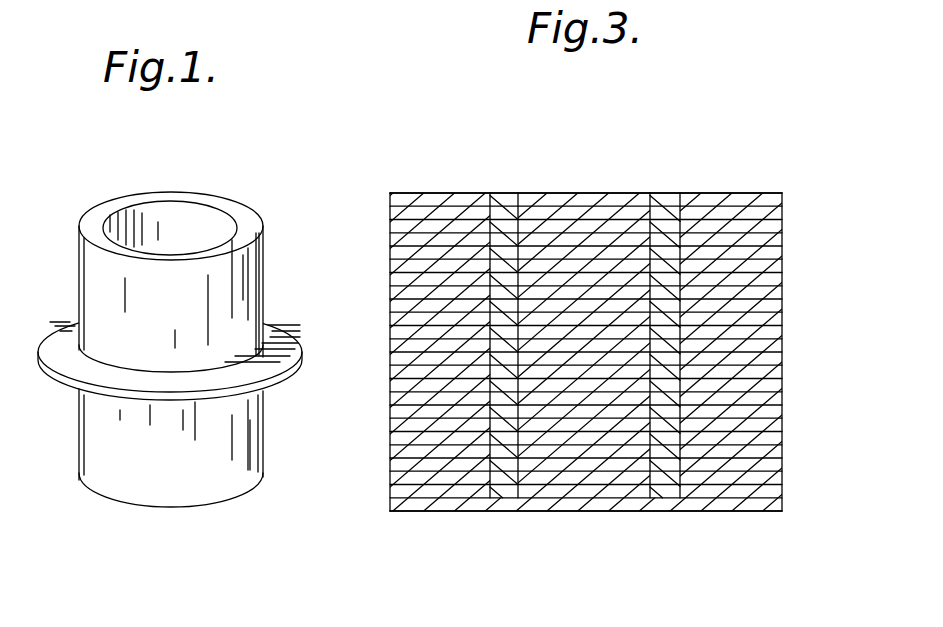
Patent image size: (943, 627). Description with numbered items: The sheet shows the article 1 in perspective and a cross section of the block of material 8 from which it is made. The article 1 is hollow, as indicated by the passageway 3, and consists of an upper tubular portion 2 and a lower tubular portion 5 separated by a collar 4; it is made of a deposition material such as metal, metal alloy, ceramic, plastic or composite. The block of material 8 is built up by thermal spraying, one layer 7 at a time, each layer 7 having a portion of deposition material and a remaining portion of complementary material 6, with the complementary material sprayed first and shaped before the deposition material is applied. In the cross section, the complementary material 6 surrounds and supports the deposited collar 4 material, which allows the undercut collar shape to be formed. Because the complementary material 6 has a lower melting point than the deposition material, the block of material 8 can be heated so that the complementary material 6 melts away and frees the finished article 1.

In FIG. 1, the article 1 is at (188, 196).
In FIG. 3, the article 1 is at (510, 194).
In FIG. 1, the upper tubular portion 2 is at (107, 283).
In FIG. 3, the upper tubular portion 2 is at (508, 262).
In FIG. 1, the passageway 3 is at (153, 228).
In FIG. 3, the passageway 3 is at (518, 453).
In FIG. 1, the collar 4 is at (87, 372).
In FIG. 3, the collar 4 is at (458, 350).
In FIG. 1, the lower tubular portion 5 is at (160, 478).
In FIG. 3, the lower tubular portion 5 is at (503, 468).
In FIG. 3, the complementary material 6 is at (438, 227).
In FIG. 3, the layer 7 is at (782, 227).
In FIG. 3, the block of material 8 is at (390, 400).